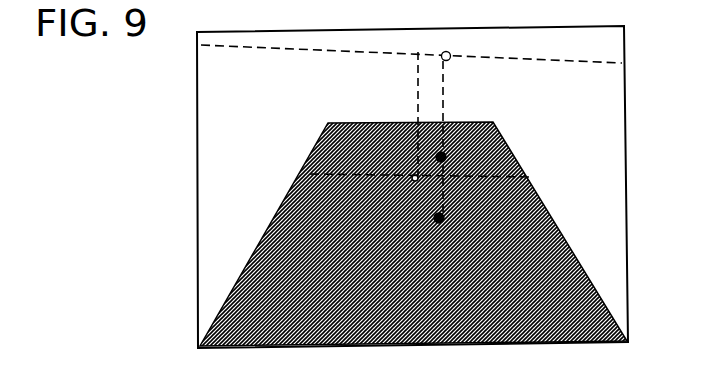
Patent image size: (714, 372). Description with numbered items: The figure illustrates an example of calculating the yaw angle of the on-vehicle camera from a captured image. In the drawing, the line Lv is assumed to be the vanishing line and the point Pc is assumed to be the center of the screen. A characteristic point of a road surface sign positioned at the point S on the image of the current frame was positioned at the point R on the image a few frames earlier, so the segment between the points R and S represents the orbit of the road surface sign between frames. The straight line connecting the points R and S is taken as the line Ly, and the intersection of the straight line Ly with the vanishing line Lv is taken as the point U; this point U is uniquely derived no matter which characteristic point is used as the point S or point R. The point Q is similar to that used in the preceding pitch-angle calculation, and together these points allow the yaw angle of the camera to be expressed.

The point Q is at (417, 72).
The intersection point U is at (449, 61).
The vanishing line Lv is at (565, 63).
The center of the screen Pc is at (310, 173).
The point R is at (441, 157).
The straight line Ly is at (533, 177).
The point S is at (439, 218).